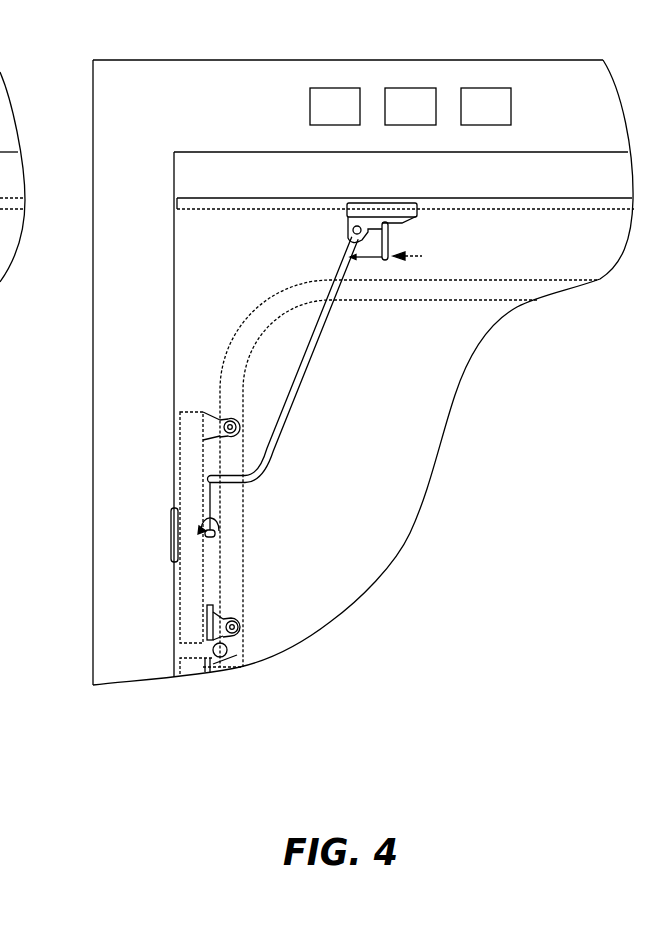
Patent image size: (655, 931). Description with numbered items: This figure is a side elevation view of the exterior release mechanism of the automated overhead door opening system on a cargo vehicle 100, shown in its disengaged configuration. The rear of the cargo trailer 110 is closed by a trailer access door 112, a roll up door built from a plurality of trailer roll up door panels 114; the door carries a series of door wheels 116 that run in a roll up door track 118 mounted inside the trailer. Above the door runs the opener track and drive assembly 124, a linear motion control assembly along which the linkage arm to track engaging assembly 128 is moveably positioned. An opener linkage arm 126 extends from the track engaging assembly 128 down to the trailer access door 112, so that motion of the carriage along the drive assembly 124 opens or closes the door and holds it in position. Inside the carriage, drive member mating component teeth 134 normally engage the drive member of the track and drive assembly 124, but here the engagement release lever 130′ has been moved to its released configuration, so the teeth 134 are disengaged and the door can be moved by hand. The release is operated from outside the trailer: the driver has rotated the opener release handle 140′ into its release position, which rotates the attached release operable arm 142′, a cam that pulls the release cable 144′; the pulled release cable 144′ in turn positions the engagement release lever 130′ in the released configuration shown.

The cargo vehicle 100 is at (455, 530).
The cargo trailer 110 is at (379, 60).
The trailer access door 112 is at (93, 305).
The trailer roll up door panels 114 is at (180, 573).
The door wheels 116 is at (220, 428).
The roll up door track 118 is at (243, 645).
The opener track and drive assembly 124 is at (538, 198).
The opener linkage arm 126 is at (301, 370).
The linkage arm to track engaging assembly 128 is at (362, 207).
The engagement release lever in released configuration 130′ is at (388, 240).
The drive member mating component teeth 134 is at (250, 255).
The opener release handle in release position 140′ is at (171, 535).
The release operable arm in release position 142′ is at (217, 534).
The release cable in released configuration 144′ is at (320, 308).